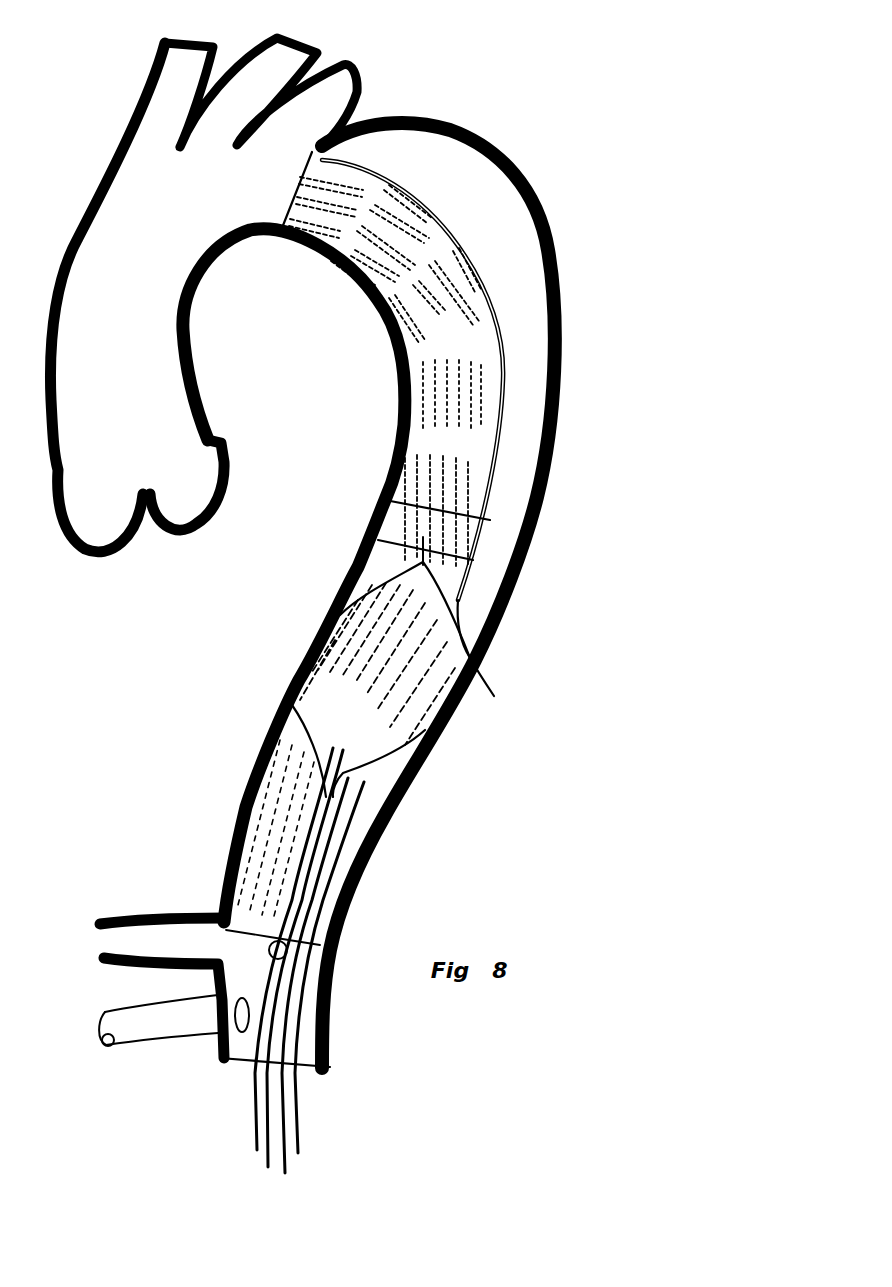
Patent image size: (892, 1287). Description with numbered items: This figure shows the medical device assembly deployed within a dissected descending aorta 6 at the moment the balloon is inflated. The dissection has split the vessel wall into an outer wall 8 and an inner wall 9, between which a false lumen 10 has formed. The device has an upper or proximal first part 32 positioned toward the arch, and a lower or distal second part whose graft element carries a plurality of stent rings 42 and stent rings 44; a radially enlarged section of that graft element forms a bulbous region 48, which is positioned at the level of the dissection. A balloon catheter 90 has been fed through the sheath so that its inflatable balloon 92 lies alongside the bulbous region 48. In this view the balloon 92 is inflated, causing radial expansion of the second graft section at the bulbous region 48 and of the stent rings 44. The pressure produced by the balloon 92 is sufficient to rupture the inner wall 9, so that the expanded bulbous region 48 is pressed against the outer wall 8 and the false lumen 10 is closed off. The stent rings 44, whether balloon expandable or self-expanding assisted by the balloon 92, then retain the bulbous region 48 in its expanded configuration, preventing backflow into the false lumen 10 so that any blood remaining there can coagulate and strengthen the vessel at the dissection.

The descending aorta 6 is at (345, 572).
The outer wall 8 is at (552, 232).
The inner wall 9 is at (460, 597).
The false lumen 10 is at (525, 372).
The first part 32 is at (385, 287).
The stent rings 42 is at (270, 863).
The stent rings 44 is at (367, 644).
The bulbous region 48 is at (453, 720).
The balloon catheter 90 is at (320, 797).
The inflatable balloon 92 is at (483, 670).